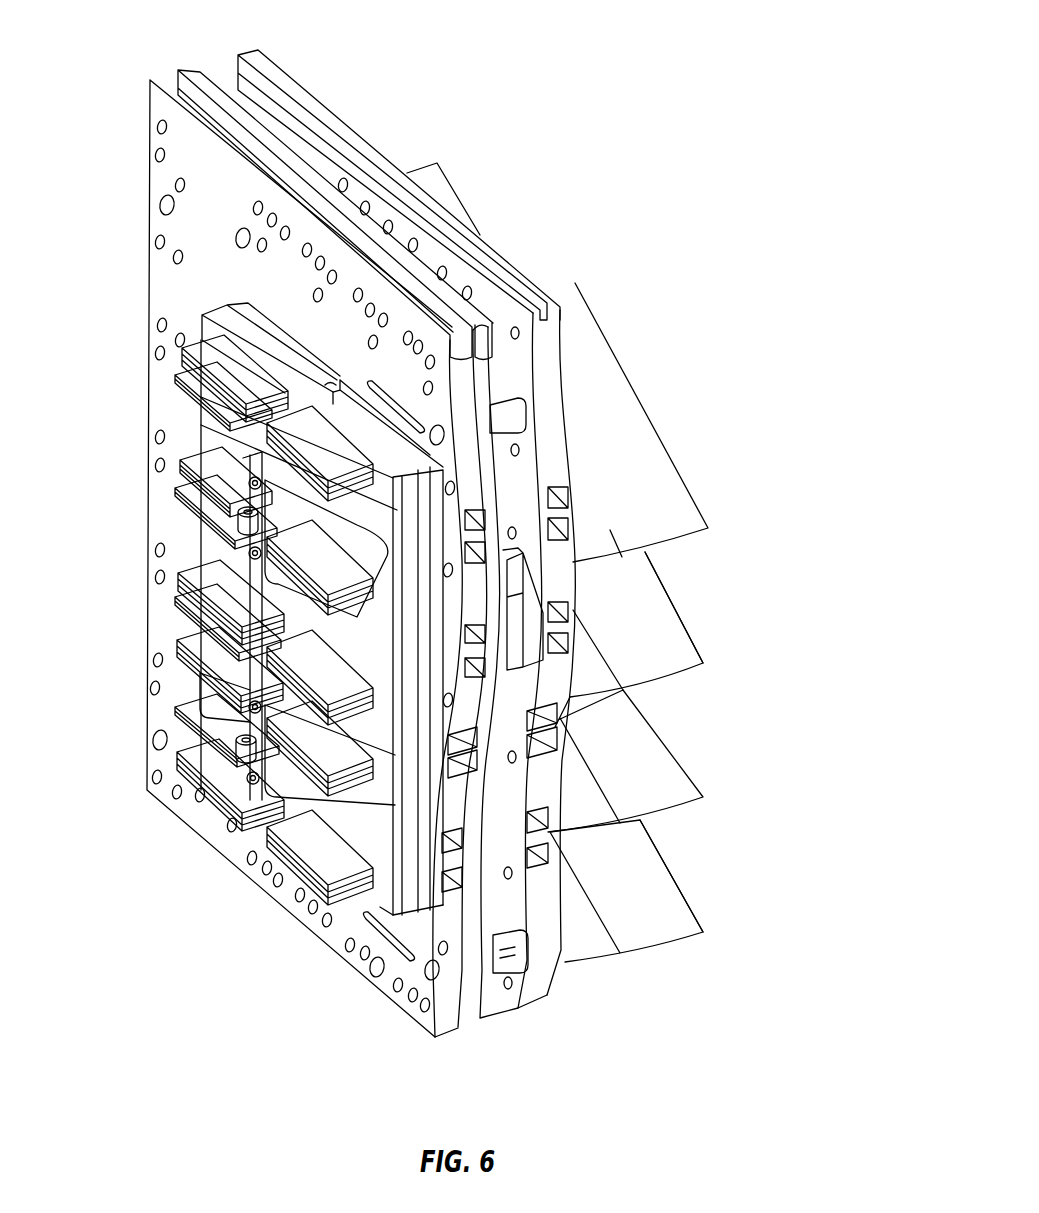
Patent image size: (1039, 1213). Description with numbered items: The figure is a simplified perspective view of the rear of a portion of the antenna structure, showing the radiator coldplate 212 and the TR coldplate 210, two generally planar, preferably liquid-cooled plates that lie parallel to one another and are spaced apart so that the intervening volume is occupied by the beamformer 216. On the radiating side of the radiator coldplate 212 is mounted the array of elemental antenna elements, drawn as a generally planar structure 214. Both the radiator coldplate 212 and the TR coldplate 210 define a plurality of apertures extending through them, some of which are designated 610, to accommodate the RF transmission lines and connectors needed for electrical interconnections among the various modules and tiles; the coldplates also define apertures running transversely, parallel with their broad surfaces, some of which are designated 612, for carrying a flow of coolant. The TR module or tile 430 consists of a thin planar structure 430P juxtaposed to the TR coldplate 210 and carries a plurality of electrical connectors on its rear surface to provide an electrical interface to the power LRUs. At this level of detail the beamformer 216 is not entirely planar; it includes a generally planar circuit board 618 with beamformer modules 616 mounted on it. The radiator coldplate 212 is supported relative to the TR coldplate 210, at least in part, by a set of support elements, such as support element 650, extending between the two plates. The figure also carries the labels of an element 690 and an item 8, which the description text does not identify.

The free space direction 8 is at (735, 620).
The TR cold plate 210 is at (345, 957).
The radiator cold plate 212 is at (560, 315).
The array of elemental antenna elements 214 is at (692, 490).
The beamformer arrangement 216 is at (842, 788).
The TR module or tile 430 is at (217, 808).
The thin planar structure 430P is at (423, 920).
The apertures 610 is at (232, 98).
The coolant apertures 612 is at (560, 495).
The beamformer modules 616 is at (555, 650).
The circuit board 618 is at (550, 832).
The support elements 650 is at (508, 417).
The electronics module 690 is at (205, 393).